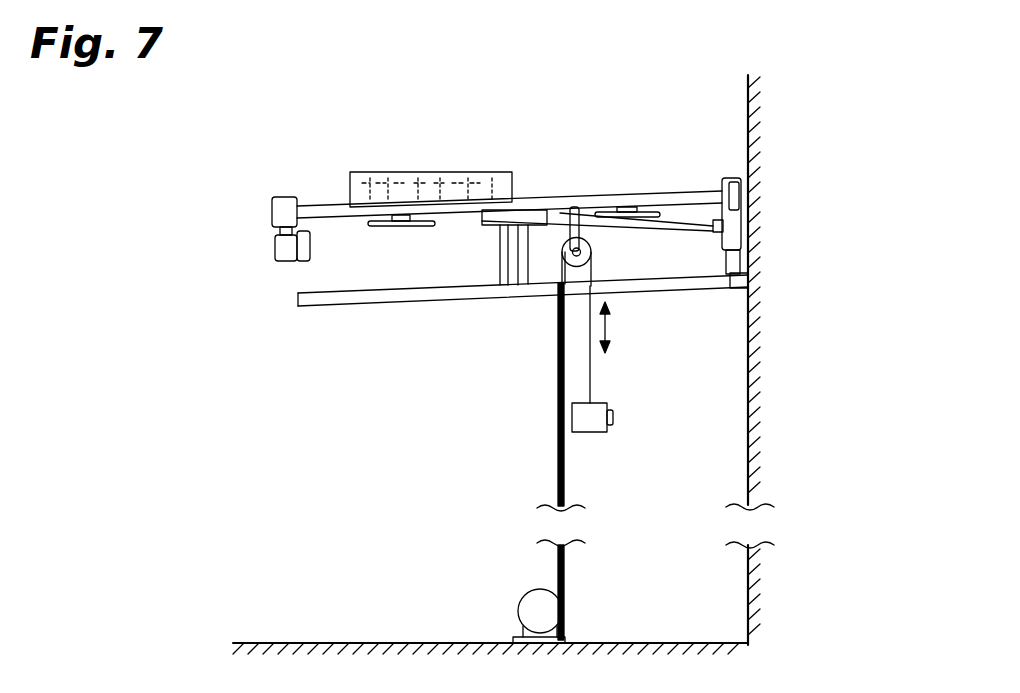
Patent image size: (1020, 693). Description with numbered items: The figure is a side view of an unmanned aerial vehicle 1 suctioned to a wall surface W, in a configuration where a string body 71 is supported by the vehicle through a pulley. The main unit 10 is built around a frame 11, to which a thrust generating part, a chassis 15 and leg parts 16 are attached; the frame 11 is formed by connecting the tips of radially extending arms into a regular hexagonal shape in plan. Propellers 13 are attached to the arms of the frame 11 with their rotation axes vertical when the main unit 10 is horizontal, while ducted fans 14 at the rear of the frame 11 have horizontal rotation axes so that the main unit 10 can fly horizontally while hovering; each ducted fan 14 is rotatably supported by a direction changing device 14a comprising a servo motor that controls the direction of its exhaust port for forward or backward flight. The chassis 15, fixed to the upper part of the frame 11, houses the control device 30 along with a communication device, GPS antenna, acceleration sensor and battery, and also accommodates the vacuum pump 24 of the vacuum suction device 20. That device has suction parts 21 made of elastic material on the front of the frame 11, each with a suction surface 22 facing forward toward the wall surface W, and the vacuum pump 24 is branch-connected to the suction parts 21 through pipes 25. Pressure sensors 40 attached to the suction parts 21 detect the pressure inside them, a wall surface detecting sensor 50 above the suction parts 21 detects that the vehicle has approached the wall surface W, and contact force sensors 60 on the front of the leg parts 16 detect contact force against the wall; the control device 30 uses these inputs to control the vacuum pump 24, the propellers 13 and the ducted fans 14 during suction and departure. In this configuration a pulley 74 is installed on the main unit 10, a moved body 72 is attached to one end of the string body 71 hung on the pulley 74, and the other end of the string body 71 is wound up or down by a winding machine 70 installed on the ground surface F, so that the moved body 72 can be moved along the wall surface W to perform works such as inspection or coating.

The unmanned aerial vehicle 1 is at (646, 104).
The main unit 10 is at (569, 176).
The frame 11 is at (606, 189).
The propellers 13 is at (385, 228).
The ducted fans 14 is at (276, 248).
The direction changing device 14a is at (274, 210).
The chassis 15 is at (348, 180).
The leg parts 16 is at (411, 306).
The vacuum suction device 20 is at (718, 264).
The suction parts 21 is at (753, 246).
The suction surface 22 is at (748, 234).
The vacuum pump 24 is at (464, 170).
The pipes 25 is at (562, 205).
The control device 30 is at (389, 170).
The pressure sensors 40 is at (718, 189).
The wall surface detecting sensor 50 is at (736, 177).
The contact force sensors 60 is at (742, 293).
The winding machine 70 is at (532, 613).
The string body 71 is at (592, 368).
The moved body 72 is at (588, 422).
The pulley 74 is at (568, 262).
The wall surface W is at (748, 478).
The ground surface F is at (340, 640).